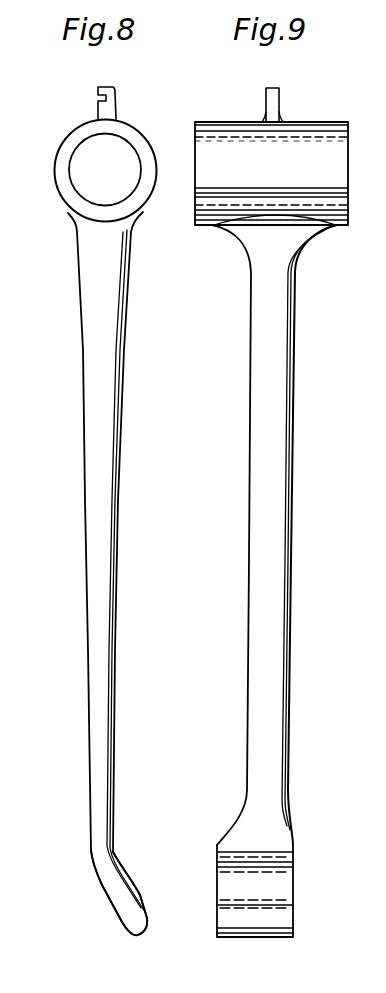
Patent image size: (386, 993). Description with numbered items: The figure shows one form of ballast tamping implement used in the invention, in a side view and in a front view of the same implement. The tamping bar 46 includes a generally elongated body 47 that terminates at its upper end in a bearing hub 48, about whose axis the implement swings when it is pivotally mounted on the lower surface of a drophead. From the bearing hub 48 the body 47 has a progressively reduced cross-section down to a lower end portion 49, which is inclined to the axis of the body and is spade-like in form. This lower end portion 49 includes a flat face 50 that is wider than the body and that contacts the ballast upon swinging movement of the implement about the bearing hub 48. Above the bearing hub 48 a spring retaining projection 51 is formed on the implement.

In FIG. 8, the tamping bar 46 is at (124, 419).
In FIG. 9, the tamping bar 46 is at (294, 437).
In FIG. 8, the elongated body 47 is at (108, 488).
In FIG. 9, the elongated body 47 is at (278, 498).
In FIG. 8, the bearing hub 48 is at (75, 200).
In FIG. 9, the bearing hub 48 is at (243, 200).
In FIG. 8, the lower end portion 49 is at (117, 872).
In FIG. 9, the lower end portion 49 is at (217, 880).
In FIG. 9, the flat face 50 is at (273, 888).
In FIG. 8, the spring retaining projection 51 is at (112, 104).
In FIG. 9, the spring retaining projection 51 is at (272, 101).